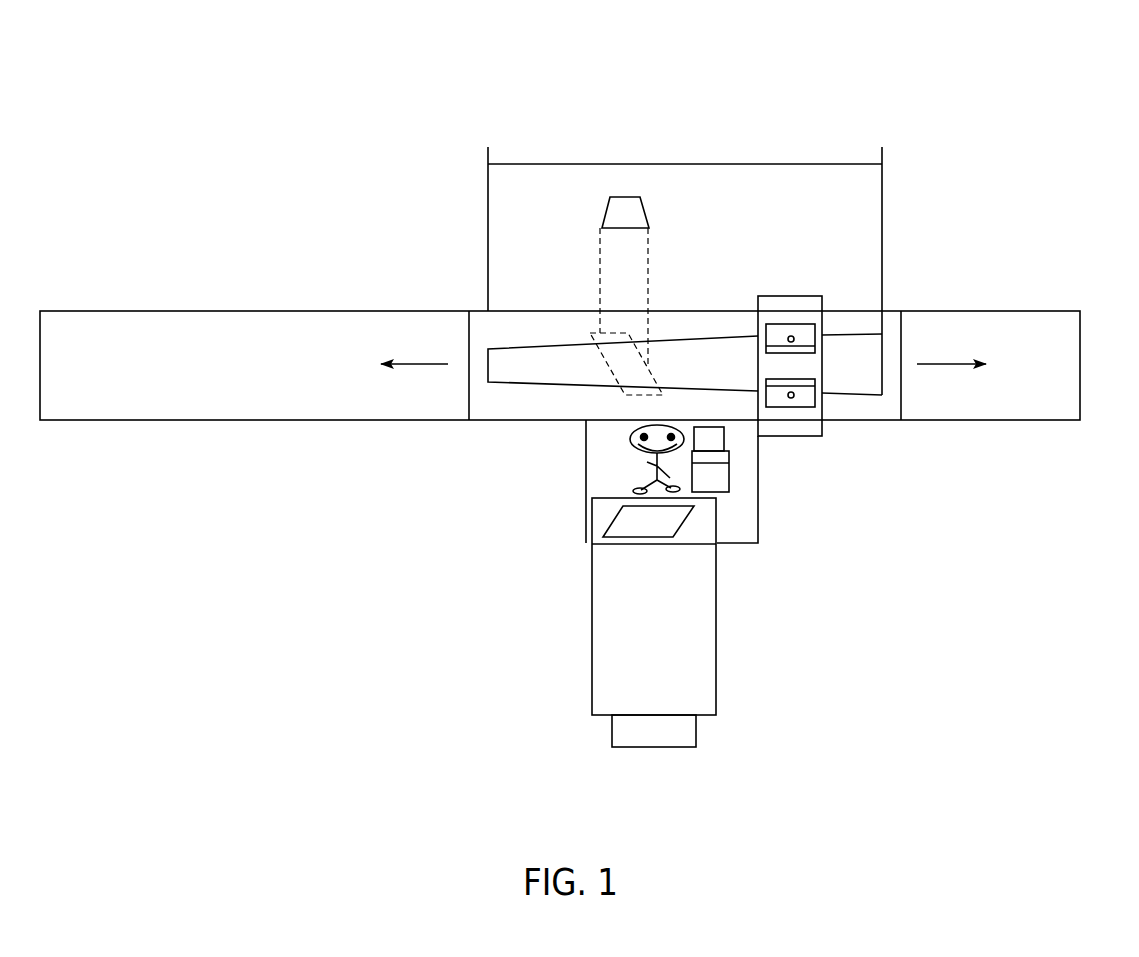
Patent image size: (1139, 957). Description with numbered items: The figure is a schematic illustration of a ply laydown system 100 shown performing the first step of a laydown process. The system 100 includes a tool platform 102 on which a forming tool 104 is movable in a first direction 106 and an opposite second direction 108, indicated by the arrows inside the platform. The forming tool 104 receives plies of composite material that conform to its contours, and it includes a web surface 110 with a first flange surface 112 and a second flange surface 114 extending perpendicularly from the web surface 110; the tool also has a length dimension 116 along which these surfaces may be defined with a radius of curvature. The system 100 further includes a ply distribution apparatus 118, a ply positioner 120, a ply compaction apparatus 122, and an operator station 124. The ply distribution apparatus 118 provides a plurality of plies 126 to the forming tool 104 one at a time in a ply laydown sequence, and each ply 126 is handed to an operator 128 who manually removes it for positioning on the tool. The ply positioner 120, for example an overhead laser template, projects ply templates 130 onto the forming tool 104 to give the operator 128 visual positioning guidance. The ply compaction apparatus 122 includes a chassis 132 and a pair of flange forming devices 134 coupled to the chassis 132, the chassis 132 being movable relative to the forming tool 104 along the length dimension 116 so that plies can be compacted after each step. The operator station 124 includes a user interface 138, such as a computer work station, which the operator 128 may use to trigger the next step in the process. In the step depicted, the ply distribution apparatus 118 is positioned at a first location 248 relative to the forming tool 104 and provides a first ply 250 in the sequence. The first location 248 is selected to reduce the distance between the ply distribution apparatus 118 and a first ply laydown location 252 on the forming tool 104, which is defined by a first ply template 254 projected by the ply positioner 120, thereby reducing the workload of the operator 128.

The system 100 is at (897, 86).
The tool platform 102 is at (1072, 311).
The forming tool 104 is at (883, 347).
The first direction 106 is at (416, 364).
The second direction 108 is at (966, 358).
The web surface 110 is at (904, 364).
The first flange surface 112 is at (867, 333).
The second flange surface 114 is at (843, 395).
The length dimension 116 is at (733, 164).
The ply distribution apparatus 118 is at (664, 624).
The ply positioner 120 is at (650, 218).
The ply compaction apparatus 122 is at (791, 350).
The operator station 124 is at (783, 545).
The plies 126 is at (598, 536).
The operator 128 is at (622, 452).
The ply templates 130 is at (641, 327).
The chassis 132 is at (808, 296).
The flange forming devices 134 is at (781, 323).
The user interface 138 is at (725, 439).
The first location 248 is at (542, 692).
The first ply 250 is at (622, 517).
The first ply laydown location 252 is at (618, 296).
The first ply template 254 is at (606, 333).